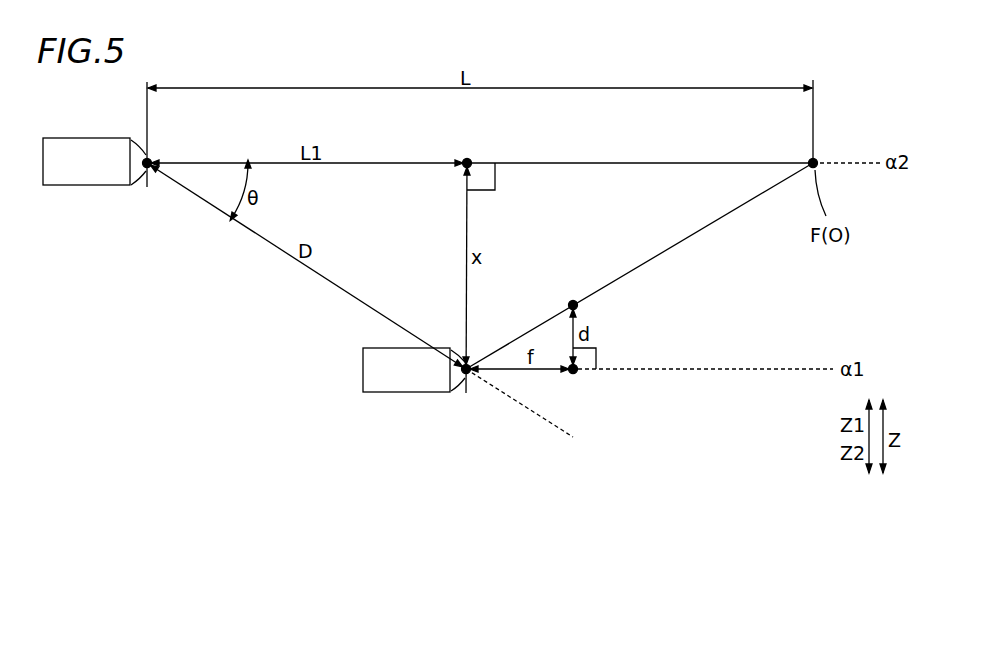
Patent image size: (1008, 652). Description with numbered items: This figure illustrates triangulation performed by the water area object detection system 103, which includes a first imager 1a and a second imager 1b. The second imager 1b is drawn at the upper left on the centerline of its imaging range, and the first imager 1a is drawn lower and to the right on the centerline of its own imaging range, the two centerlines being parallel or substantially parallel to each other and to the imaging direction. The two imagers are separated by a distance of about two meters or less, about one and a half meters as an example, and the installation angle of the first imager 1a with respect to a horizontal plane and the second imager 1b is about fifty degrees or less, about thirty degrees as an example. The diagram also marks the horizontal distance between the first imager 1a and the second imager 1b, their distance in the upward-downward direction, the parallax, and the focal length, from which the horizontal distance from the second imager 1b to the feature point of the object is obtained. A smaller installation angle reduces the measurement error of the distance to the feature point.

The first imager 1a is at (373, 348).
The second imager 1b is at (53, 138).
The water area object detection system 103 is at (437, 417).